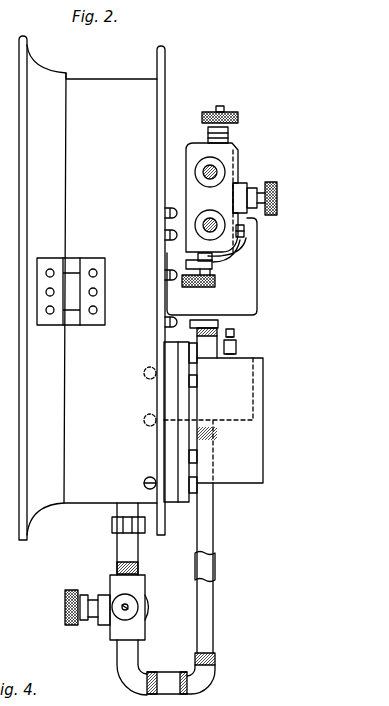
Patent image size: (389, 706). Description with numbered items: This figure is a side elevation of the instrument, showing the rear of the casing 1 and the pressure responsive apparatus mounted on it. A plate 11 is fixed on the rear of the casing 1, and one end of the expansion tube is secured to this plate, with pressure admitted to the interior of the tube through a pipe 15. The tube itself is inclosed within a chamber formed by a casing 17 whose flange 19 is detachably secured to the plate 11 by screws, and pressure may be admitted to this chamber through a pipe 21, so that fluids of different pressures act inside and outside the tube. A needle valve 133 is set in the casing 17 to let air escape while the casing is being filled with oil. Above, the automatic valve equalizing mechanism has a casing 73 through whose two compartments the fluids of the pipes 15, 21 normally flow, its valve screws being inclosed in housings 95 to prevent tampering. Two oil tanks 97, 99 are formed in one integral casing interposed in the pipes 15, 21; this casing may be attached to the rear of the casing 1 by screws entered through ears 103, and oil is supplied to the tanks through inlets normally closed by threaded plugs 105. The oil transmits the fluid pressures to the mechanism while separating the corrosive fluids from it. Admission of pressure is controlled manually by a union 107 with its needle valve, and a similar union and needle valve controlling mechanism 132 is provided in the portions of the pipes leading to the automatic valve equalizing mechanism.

The casing 1 is at (97, 93).
The plate 11 is at (168, 393).
The pipe 15 is at (217, 170).
The casing 17 is at (237, 463).
The flange 19 is at (180, 347).
The pipe 21 is at (213, 213).
The casing 73 is at (190, 173).
The housing 95 is at (192, 148).
The oil tank 97 is at (180, 333).
The oil tank 99 is at (180, 297).
The ears 103 is at (166, 237).
The threaded plug 105 is at (245, 243).
The union 107 is at (113, 632).
The union and needle valve controlling mechanism 132 is at (202, 195).
The needle valve 133 is at (233, 340).